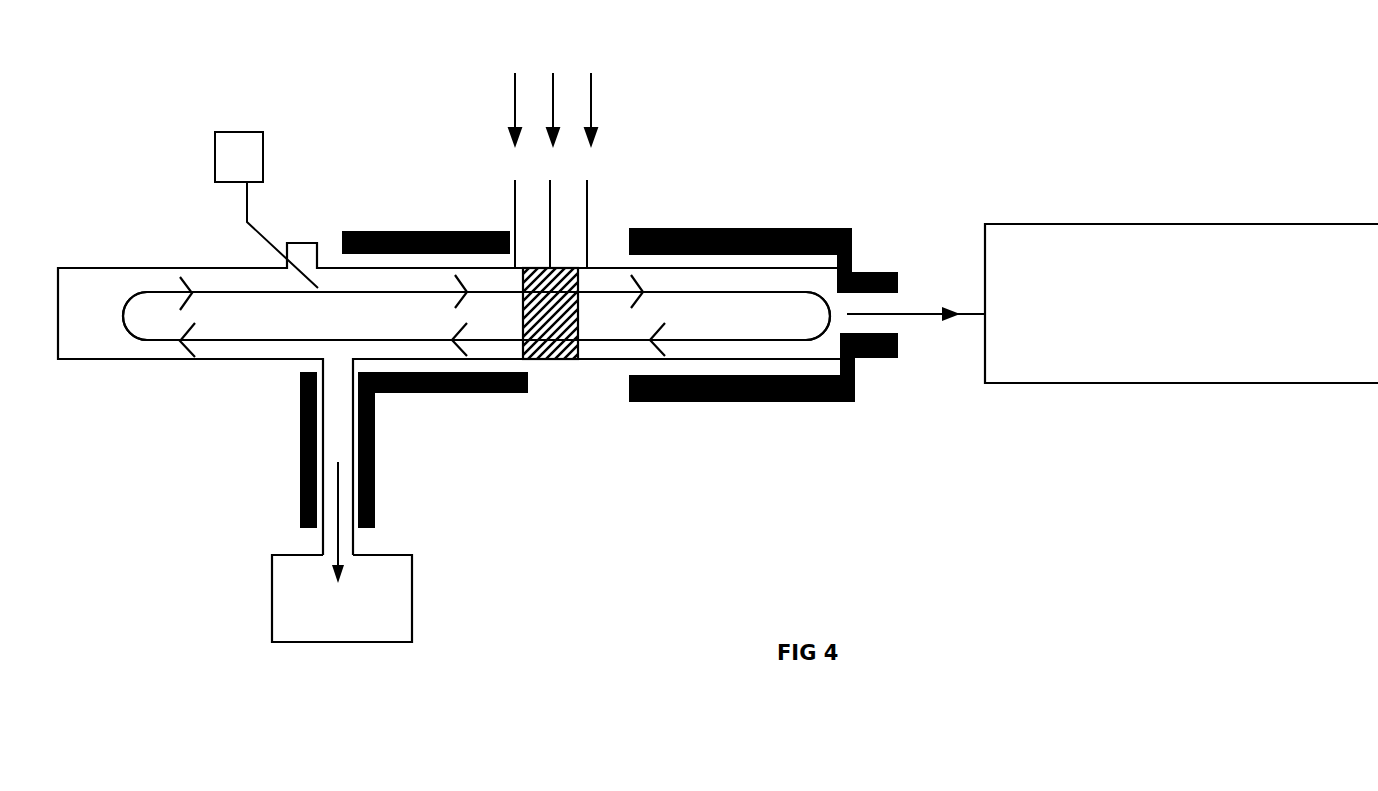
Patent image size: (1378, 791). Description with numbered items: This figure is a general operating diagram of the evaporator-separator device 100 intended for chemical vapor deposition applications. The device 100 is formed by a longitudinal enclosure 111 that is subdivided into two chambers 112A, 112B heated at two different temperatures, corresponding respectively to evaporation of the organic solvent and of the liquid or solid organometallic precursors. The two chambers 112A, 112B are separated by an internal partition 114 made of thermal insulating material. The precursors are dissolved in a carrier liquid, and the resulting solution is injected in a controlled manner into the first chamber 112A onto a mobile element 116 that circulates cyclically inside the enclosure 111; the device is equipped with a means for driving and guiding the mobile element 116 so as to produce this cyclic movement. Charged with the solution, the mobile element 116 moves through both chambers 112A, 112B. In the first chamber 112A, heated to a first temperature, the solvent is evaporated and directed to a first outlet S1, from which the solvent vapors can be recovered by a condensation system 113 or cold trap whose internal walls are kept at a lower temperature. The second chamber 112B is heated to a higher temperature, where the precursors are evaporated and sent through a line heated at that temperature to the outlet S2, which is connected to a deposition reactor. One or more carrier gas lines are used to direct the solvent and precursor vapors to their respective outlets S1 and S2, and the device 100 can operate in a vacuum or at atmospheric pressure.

The evaporator-separator device 100 is at (573, 552).
The longitudinal enclosure 111 is at (173, 268).
The first chamber 112A is at (113, 342).
The second chamber 112B is at (738, 349).
The condensation system 113 is at (349, 552).
The internal partition 114 is at (550, 358).
The mobile element 116 is at (253, 341).
The first outlet S1 is at (353, 540).
The outlet S2 is at (907, 307).